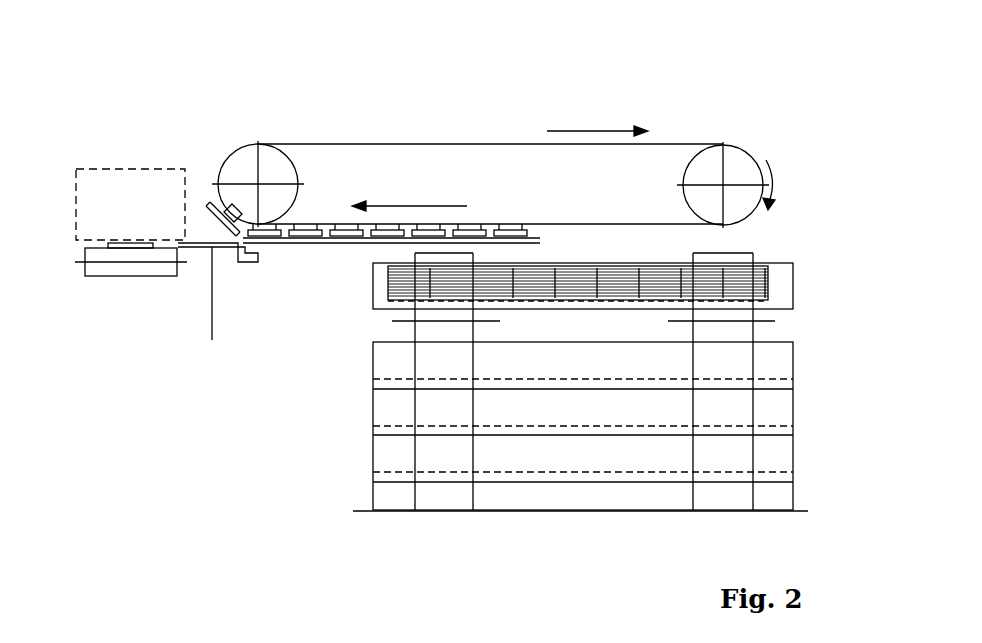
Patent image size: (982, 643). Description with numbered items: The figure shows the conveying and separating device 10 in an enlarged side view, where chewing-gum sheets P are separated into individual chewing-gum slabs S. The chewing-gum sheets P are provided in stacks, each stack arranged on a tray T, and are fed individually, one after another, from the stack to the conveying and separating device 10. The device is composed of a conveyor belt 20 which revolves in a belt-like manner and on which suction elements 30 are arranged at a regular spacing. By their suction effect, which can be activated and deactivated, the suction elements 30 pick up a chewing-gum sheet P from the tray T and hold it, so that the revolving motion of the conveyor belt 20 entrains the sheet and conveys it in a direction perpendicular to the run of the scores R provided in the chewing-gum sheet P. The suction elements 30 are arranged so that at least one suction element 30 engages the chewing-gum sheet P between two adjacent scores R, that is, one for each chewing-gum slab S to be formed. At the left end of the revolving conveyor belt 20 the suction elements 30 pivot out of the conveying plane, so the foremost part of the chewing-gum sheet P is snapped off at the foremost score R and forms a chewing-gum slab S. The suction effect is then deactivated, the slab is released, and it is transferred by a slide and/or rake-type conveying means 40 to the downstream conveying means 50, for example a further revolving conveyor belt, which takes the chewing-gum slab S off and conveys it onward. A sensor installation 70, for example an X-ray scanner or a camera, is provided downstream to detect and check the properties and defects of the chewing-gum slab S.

The conveying and separating device 10 is at (474, 132).
The conveyor belt 20 is at (327, 162).
The suction elements 30 is at (215, 203).
The rake-type conveying means 40 is at (252, 262).
The conveying means 50 is at (127, 270).
The sensor installation 70 is at (125, 187).
The chewing-gum slab S is at (207, 313).
The chewing-gum sheet P is at (762, 272).
The scores R is at (568, 272).
The tray T is at (780, 285).